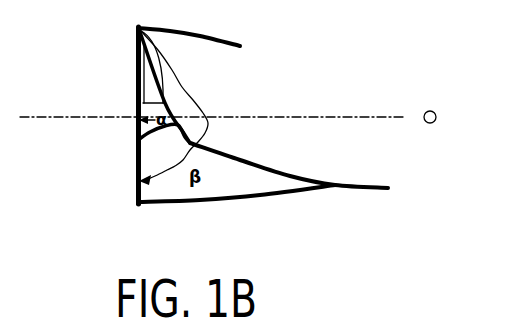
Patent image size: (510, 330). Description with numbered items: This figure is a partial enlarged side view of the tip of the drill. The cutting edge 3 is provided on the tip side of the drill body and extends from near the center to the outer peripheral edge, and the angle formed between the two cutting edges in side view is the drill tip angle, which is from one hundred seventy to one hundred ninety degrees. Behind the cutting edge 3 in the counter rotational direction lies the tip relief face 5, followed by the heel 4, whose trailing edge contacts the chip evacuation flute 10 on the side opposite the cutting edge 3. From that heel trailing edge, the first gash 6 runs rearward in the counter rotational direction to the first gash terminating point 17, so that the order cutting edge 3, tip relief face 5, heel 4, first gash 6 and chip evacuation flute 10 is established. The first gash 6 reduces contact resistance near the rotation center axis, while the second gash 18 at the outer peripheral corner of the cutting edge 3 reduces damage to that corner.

The cutting edge 3 is at (137, 52).
The heel 4 is at (150, 83).
The tip relief face 5 is at (143, 72).
The first gash 6 is at (137, 130).
The chip evacuation flute 10 is at (226, 192).
The first gash terminating point 17 is at (195, 145).
The second gash 18 is at (137, 203).